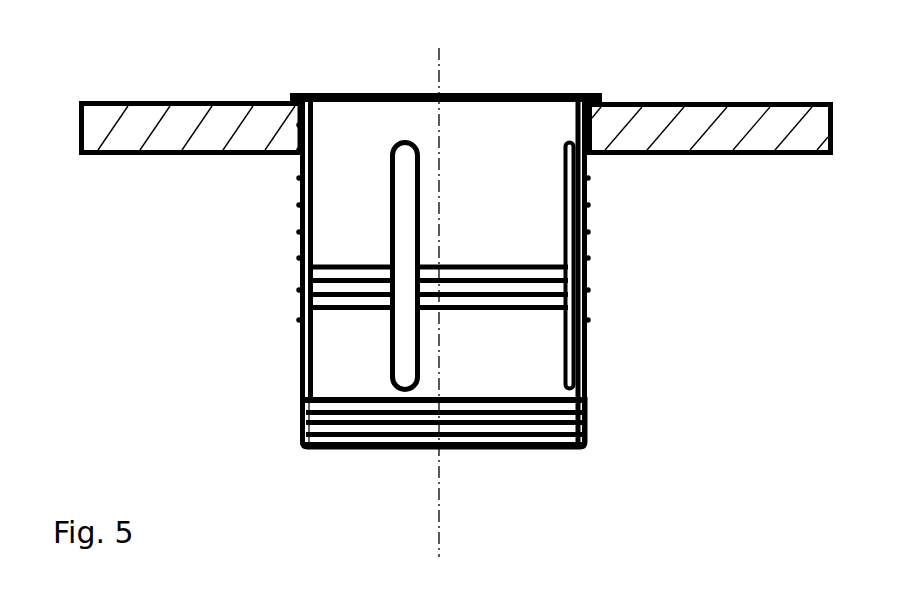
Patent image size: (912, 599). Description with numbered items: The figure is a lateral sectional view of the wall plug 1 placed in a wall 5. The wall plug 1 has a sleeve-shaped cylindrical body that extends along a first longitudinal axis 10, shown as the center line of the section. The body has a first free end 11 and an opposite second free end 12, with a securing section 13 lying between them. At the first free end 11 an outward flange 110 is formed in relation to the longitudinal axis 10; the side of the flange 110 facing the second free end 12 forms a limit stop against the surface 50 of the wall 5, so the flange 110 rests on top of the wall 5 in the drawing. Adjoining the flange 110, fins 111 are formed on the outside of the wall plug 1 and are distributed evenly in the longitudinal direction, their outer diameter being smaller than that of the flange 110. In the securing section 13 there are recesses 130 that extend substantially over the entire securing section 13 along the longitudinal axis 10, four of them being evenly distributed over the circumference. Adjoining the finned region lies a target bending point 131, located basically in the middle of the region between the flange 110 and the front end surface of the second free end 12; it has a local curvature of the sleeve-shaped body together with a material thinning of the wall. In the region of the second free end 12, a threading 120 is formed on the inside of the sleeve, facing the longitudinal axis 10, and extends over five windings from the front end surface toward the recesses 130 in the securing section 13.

The wall plug 1 is at (167, 43).
The wall 5 is at (732, 117).
The surface of the wall 50 is at (643, 103).
The first longitudinal axis 10 is at (442, 62).
The first free end 11 is at (693, 173).
The second free end 12 is at (678, 395).
The securing section 13 is at (495, 266).
The flange 110 is at (290, 97).
The fins 111 is at (300, 208).
The threading 120 is at (495, 433).
The recesses 130 is at (398, 342).
The target bending point 131 is at (313, 285).